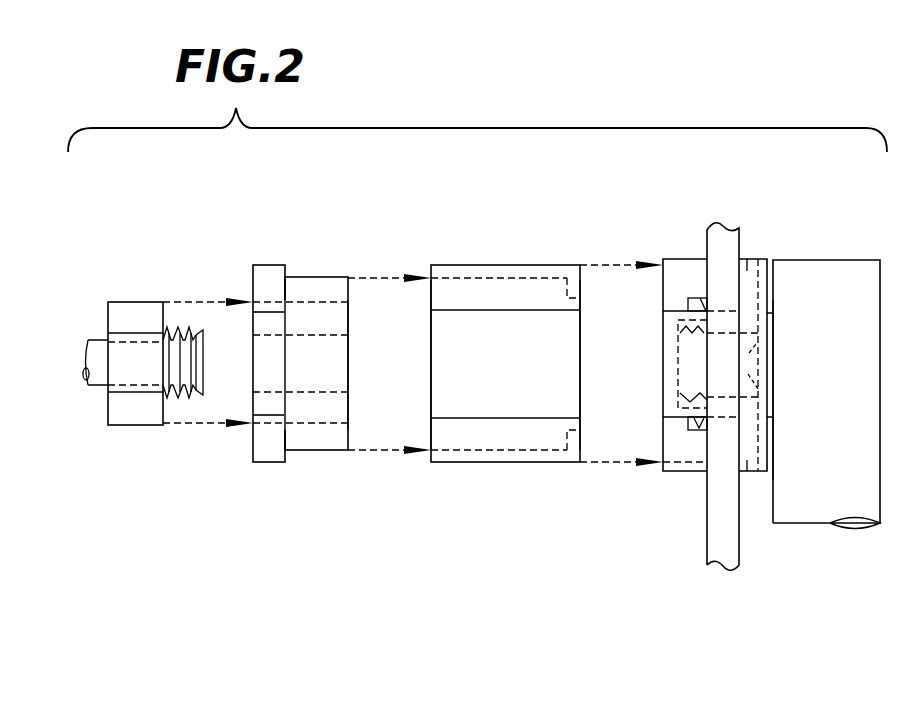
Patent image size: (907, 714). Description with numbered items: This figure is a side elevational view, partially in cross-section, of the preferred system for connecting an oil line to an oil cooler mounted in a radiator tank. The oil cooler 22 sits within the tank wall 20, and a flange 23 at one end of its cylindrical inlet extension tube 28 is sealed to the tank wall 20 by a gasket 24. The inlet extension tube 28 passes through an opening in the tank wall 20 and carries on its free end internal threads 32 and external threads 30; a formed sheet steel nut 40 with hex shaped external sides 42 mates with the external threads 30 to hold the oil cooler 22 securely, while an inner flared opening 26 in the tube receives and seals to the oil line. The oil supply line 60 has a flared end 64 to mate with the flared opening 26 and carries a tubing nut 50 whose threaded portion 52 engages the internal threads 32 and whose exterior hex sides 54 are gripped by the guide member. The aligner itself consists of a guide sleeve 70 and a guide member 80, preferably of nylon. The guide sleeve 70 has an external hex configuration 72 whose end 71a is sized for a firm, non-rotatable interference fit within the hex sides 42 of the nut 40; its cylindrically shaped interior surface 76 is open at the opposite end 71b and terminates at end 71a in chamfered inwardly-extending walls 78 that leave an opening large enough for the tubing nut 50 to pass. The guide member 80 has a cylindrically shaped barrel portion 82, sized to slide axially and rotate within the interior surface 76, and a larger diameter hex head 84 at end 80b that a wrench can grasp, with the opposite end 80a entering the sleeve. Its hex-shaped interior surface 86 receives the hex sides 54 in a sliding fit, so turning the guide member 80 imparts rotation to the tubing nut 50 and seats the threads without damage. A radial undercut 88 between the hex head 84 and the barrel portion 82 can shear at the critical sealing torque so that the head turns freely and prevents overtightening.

The tank wall 20 is at (735, 545).
The oil cooler 22 is at (830, 272).
The flange 23 is at (783, 438).
The gasket 24 is at (747, 258).
The inner flared opening 26 is at (757, 388).
The inlet extension tube 28 is at (733, 440).
The external threads 30 is at (699, 297).
The internal threads 32 is at (662, 378).
The nut 40 is at (670, 233).
The hex shaped external sides 42 is at (678, 450).
The tubing nut 50 is at (118, 452).
The threaded portion 52 is at (181, 422).
The exterior hex sides 54 is at (121, 315).
The oil supply line 60 is at (86, 342).
The flared end 64 is at (201, 335).
The guide sleeve 70 is at (507, 498).
The end of guide sleeve 71a is at (590, 272).
The opposite end of guide sleeve 71b is at (431, 272).
The external hex configuration 72 is at (507, 266).
The cylindrically shaped interior surface 76 is at (506, 279).
The inwardly-extending walls 78 is at (572, 429).
The guide member 80 is at (280, 500).
The end of guide member 80a is at (348, 442).
The end of guide member 80b is at (253, 442).
The barrel portion 82 is at (314, 300).
The hex head 84 is at (262, 285).
The interior surface 86 is at (330, 302).
The radial undercut 88 is at (293, 300).